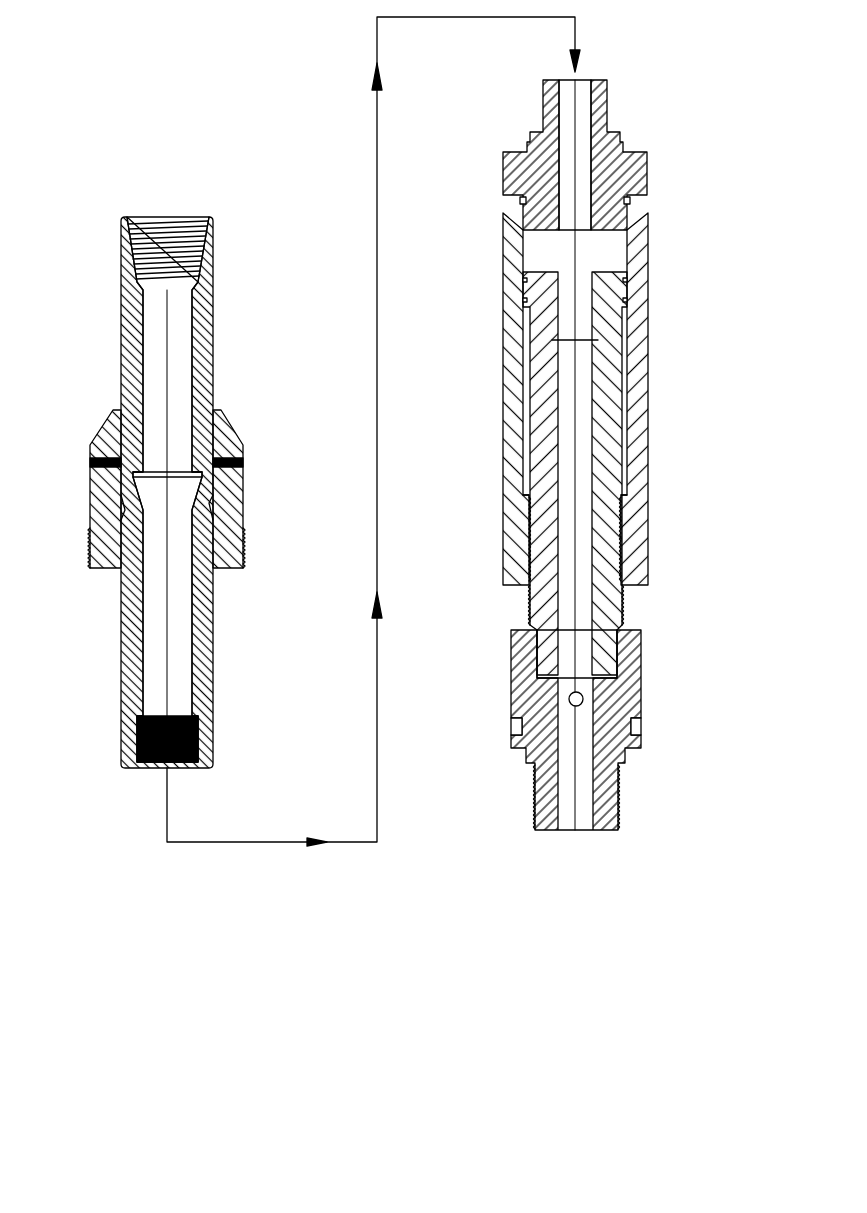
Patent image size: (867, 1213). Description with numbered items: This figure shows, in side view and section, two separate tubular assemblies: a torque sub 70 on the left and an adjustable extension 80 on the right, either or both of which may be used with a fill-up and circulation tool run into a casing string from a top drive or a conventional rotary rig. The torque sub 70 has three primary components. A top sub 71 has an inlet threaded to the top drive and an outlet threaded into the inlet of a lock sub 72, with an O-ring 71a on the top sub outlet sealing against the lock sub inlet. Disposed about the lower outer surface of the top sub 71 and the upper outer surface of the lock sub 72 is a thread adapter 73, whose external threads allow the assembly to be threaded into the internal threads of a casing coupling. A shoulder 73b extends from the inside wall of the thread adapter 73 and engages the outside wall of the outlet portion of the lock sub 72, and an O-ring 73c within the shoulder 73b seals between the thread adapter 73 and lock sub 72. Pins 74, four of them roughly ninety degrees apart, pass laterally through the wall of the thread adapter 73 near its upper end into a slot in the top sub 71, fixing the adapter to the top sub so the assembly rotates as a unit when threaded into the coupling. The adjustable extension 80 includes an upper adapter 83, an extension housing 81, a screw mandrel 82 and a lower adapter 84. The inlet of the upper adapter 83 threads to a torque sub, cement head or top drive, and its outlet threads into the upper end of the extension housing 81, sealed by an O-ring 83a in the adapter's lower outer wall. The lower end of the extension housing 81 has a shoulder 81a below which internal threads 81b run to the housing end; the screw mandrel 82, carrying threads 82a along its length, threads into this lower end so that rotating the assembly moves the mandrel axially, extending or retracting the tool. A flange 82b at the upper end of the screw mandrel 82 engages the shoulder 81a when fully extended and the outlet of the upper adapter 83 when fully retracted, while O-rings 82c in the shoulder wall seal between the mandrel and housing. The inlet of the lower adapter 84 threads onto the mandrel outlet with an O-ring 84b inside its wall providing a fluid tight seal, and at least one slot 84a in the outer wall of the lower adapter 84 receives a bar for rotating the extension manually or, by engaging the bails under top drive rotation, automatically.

The torque sub 70 is at (235, 380).
The top sub 71 is at (213, 305).
The O-ring 71a is at (210, 502).
The lock sub 72 is at (213, 670).
The thread adapter 73 is at (90, 493).
The shoulder 73b is at (208, 503).
The O-ring 73c is at (125, 510).
The pins 74 is at (243, 463).
The adjustable extension 80 is at (660, 445).
The extension housing 81 is at (643, 362).
The shoulder 81a is at (628, 500).
The threads 81b is at (630, 536).
The screw mandrel 82 is at (625, 603).
The threads 82a is at (528, 603).
The flange 82b is at (627, 301).
The O-rings 82c is at (525, 300).
The upper adapter 83 is at (637, 172).
The O-ring 83a is at (522, 202).
The lower adapter 84 is at (633, 748).
The slot 84a is at (642, 727).
The O-ring 84b is at (528, 682).